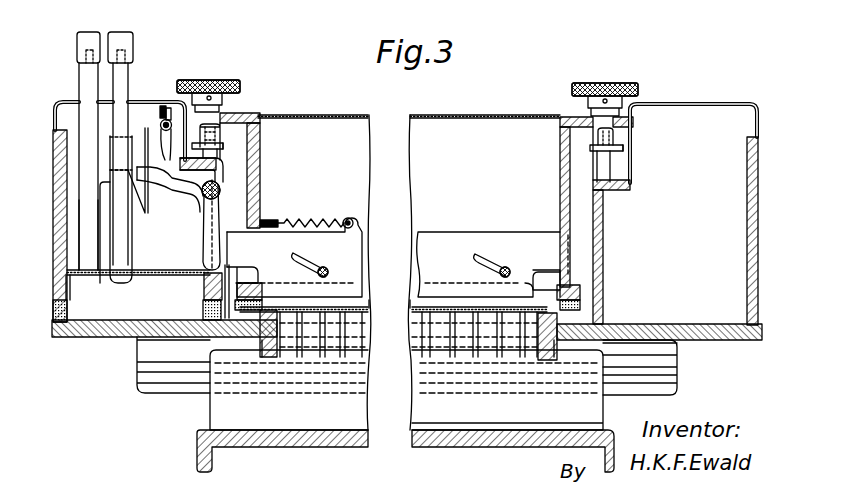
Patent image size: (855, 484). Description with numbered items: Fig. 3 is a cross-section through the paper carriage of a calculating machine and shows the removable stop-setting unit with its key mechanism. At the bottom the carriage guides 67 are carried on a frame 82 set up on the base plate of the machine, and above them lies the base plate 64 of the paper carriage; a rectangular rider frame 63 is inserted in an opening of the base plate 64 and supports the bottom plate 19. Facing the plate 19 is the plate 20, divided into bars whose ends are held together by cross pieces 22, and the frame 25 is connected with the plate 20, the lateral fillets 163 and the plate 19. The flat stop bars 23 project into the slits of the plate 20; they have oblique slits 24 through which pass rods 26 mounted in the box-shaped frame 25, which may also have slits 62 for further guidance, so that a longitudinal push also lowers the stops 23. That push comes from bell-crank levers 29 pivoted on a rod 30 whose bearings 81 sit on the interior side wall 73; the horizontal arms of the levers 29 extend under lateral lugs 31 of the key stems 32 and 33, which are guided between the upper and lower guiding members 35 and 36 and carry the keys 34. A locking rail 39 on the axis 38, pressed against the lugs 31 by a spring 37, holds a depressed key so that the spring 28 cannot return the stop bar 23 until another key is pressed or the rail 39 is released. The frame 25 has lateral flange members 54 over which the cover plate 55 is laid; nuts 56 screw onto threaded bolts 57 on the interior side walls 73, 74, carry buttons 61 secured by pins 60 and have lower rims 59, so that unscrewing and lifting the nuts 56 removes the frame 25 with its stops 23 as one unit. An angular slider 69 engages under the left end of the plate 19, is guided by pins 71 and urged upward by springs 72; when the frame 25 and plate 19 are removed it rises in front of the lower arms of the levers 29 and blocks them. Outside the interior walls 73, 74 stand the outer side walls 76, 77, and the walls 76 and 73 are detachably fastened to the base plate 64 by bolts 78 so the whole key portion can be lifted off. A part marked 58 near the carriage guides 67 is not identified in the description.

The plate 19 is at (366, 308).
The plate 20 is at (410, 290).
The cross pieces 22 is at (206, 291).
The stops 23 is at (438, 240).
The slits 24 is at (317, 264).
The frame 25 is at (560, 171).
The rods 26 is at (329, 273).
The spring 28 is at (313, 221).
The bell-crank levers 29 is at (206, 210).
The rod 30 is at (219, 196).
The lateral lugs 31 is at (145, 213).
The key stem 32 is at (84, 258).
The key stem 33 is at (124, 231).
The keys 34 is at (117, 42).
The upper guiding member 35 is at (152, 276).
The lower guiding member 36 is at (71, 100).
The spring 37 is at (161, 105).
The axis 38 is at (172, 107).
The locking rail 39 is at (162, 157).
The lateral flange members 54 is at (262, 115).
The cover plate 55 is at (331, 117).
The nuts 56 is at (223, 138).
The threaded bolts 57 is at (218, 156).
The ribs 58 is at (510, 345).
The lower rims 59 is at (226, 149).
The pins 60 is at (226, 98).
The buttons 61 is at (216, 80).
The slits 62 is at (254, 274).
The rider frame 63 is at (266, 357).
The base plate 64 is at (118, 338).
The carriage guides 67 is at (432, 411).
The angular slider 69 is at (228, 345).
The pins 71 is at (226, 292).
The springs 72 is at (237, 337).
The interior side wall 73 is at (221, 177).
The interior side wall 74 is at (604, 201).
The outer side wall 76 is at (55, 156).
The outer side wall 77 is at (748, 203).
The bolts 78 is at (55, 313).
The bearings 81 is at (184, 188).
The frame 82 is at (472, 446).
The lateral fillets 163 is at (238, 305).